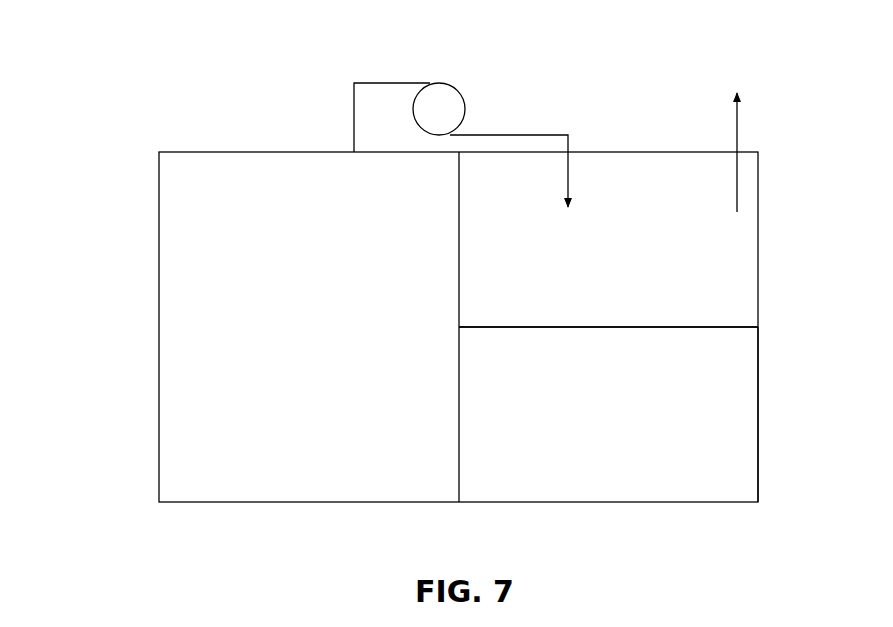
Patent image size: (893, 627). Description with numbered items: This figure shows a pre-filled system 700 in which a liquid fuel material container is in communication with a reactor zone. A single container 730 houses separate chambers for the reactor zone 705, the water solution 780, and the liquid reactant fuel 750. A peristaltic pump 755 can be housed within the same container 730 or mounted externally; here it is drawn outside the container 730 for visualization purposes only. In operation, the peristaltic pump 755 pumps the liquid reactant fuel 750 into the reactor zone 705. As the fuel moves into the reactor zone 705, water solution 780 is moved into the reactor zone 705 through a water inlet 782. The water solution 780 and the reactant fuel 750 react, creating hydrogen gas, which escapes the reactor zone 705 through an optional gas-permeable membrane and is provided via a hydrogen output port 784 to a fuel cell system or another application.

The pre-filled system 700 is at (116, 70).
The container 730 is at (158, 152).
The liquid reactant fuel 750 is at (332, 338).
The reactor zone 705 is at (632, 287).
The peristaltic pump 755 is at (436, 83).
The hydrogen output port 784 is at (740, 135).
The water inlet 782 is at (766, 328).
The water solution 780 is at (743, 450).